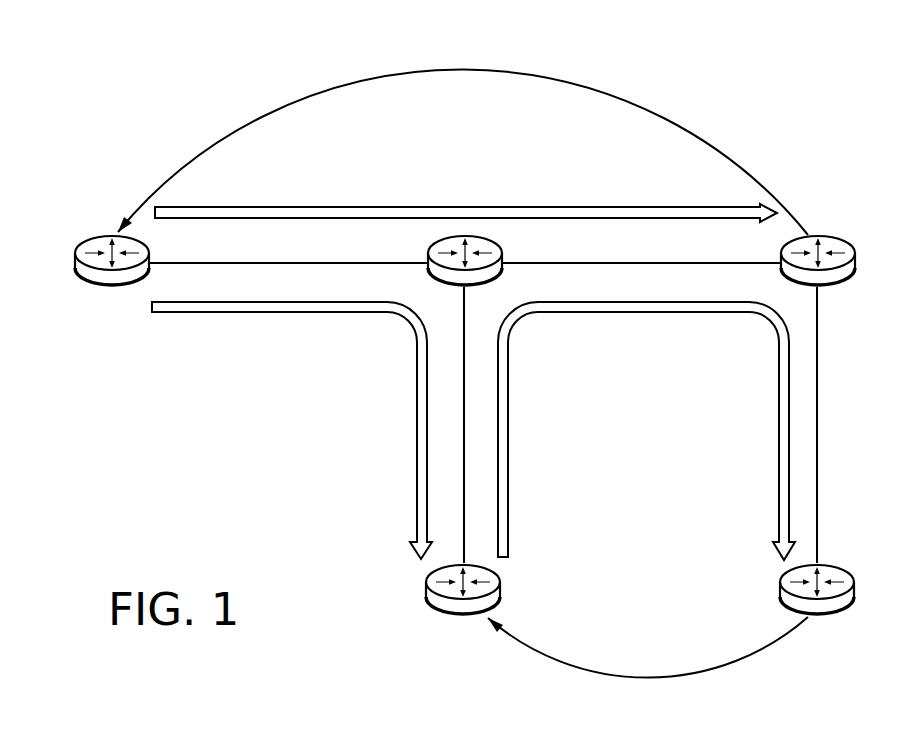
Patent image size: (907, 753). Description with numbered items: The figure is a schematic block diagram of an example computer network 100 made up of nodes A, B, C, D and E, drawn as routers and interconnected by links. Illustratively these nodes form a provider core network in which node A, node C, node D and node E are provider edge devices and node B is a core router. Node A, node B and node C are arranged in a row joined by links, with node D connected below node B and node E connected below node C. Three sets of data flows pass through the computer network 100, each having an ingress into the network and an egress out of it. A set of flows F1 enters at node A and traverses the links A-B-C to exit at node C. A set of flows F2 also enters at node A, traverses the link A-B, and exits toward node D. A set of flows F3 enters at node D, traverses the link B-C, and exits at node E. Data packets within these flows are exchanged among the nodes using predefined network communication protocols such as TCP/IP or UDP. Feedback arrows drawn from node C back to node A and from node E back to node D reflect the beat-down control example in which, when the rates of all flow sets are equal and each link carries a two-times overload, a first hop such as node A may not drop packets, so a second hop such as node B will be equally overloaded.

The computer network 100 is at (190, 65).
The node A is at (92, 287).
The node B is at (435, 243).
The node C is at (850, 282).
The node D is at (442, 614).
The node E is at (848, 614).
The set of flows F1 is at (294, 205).
The set of flows F2 is at (258, 313).
The set of flows F3 is at (637, 313).